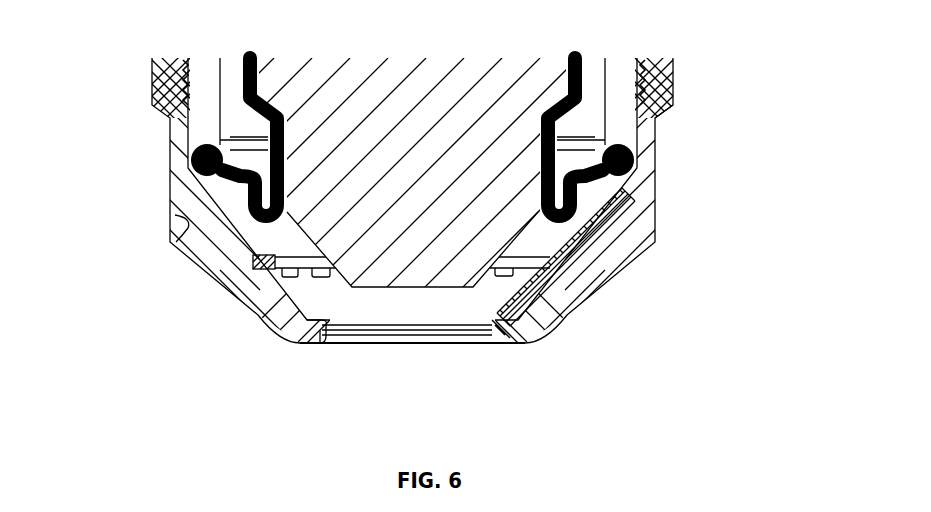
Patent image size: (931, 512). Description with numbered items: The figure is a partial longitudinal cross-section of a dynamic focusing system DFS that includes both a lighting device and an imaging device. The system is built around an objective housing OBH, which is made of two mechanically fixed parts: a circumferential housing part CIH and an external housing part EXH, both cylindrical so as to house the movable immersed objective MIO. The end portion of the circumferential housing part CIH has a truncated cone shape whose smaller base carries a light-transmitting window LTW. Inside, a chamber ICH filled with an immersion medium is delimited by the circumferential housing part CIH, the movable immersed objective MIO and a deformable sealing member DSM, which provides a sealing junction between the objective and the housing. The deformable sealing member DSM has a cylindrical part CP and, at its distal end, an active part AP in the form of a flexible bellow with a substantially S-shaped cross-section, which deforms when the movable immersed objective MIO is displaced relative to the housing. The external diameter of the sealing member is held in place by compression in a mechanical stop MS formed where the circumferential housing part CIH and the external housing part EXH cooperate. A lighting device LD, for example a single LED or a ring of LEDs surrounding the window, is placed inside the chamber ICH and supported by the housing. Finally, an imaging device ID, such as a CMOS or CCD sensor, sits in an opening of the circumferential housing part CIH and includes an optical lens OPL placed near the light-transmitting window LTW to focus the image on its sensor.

The dynamic focusing system DFS is at (133, 73).
The cylindrical part CP is at (238, 70).
The active part AP is at (200, 182).
The deformable sealing member DSM is at (170, 244).
The lighting device LD is at (215, 283).
The chamber ICH is at (255, 316).
The light-transmitting window LTW is at (318, 345).
The optical lens OPL is at (485, 340).
The imaging device ID is at (515, 338).
The movable immersed objective MIO is at (522, 222).
The mechanical stop MS is at (632, 150).
The external housing part EXH is at (662, 66).
The circumferential housing part CIH is at (660, 112).
The objective housing OBH is at (767, 33).